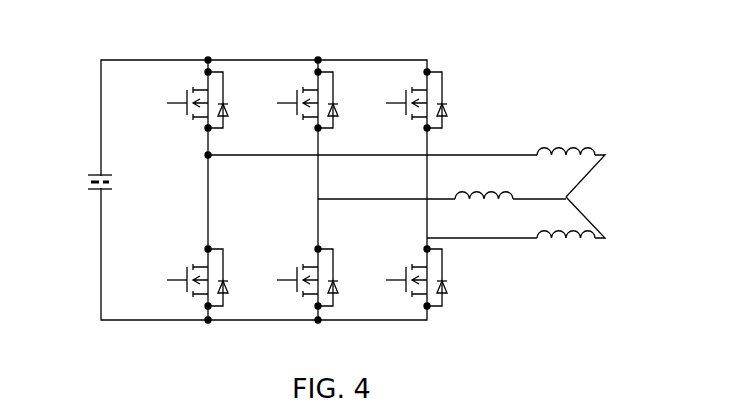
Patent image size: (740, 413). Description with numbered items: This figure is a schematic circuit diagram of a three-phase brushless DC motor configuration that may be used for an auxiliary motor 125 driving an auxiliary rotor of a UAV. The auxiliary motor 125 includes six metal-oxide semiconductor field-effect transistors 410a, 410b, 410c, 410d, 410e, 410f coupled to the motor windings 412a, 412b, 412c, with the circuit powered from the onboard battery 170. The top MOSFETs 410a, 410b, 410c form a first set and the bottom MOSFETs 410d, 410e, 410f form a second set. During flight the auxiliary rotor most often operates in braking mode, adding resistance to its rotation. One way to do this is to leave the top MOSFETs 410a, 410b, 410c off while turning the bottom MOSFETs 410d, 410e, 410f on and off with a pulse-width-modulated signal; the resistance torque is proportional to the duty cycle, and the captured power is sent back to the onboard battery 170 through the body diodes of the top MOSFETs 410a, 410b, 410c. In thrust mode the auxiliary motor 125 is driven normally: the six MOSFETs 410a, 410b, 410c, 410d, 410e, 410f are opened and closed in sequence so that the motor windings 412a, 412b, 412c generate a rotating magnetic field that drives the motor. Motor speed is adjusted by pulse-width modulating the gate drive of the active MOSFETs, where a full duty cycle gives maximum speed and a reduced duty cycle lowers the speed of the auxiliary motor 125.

The auxiliary motor 125 is at (554, 84).
The onboard battery 170 is at (80, 166).
The MOSFET 410a is at (176, 98).
The MOSFET 410b is at (288, 98).
The MOSFET 410c is at (396, 98).
The MOSFET 410d is at (175, 275).
The MOSFET 410e is at (288, 275).
The MOSFET 410f is at (398, 275).
The motor winding 412a is at (406, 162).
The motor winding 412b is at (442, 183).
The motor winding 412c is at (516, 230).